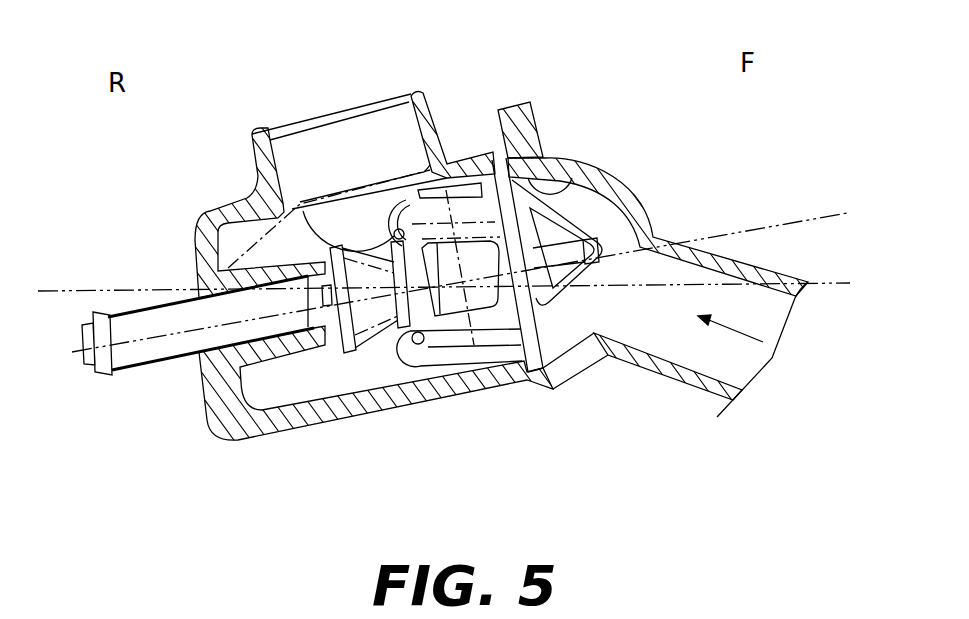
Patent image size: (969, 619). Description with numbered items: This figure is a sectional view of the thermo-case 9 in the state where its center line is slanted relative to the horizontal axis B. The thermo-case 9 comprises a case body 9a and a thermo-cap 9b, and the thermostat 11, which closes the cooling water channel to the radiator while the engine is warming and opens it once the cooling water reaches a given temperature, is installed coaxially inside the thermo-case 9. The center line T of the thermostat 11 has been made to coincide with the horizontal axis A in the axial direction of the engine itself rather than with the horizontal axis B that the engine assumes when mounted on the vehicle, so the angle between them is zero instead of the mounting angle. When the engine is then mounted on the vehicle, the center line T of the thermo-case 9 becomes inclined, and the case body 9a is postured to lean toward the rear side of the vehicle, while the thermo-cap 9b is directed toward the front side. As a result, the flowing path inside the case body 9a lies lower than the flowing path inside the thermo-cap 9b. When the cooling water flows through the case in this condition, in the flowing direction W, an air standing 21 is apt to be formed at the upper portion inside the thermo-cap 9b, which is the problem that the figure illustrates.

The thermo-case 9 is at (484, 309).
The case body 9a is at (363, 418).
The thermo-cap 9b is at (618, 183).
The thermostat 11 is at (448, 392).
The air standing 21 is at (574, 180).
The center line of the thermostat T is at (152, 365).
The horizontal axis in the axial direction of the engine itself A is at (845, 212).
The horizontal axis when the engine is mounted on the vehicle B is at (57, 291).
The flowing direction W is at (763, 342).